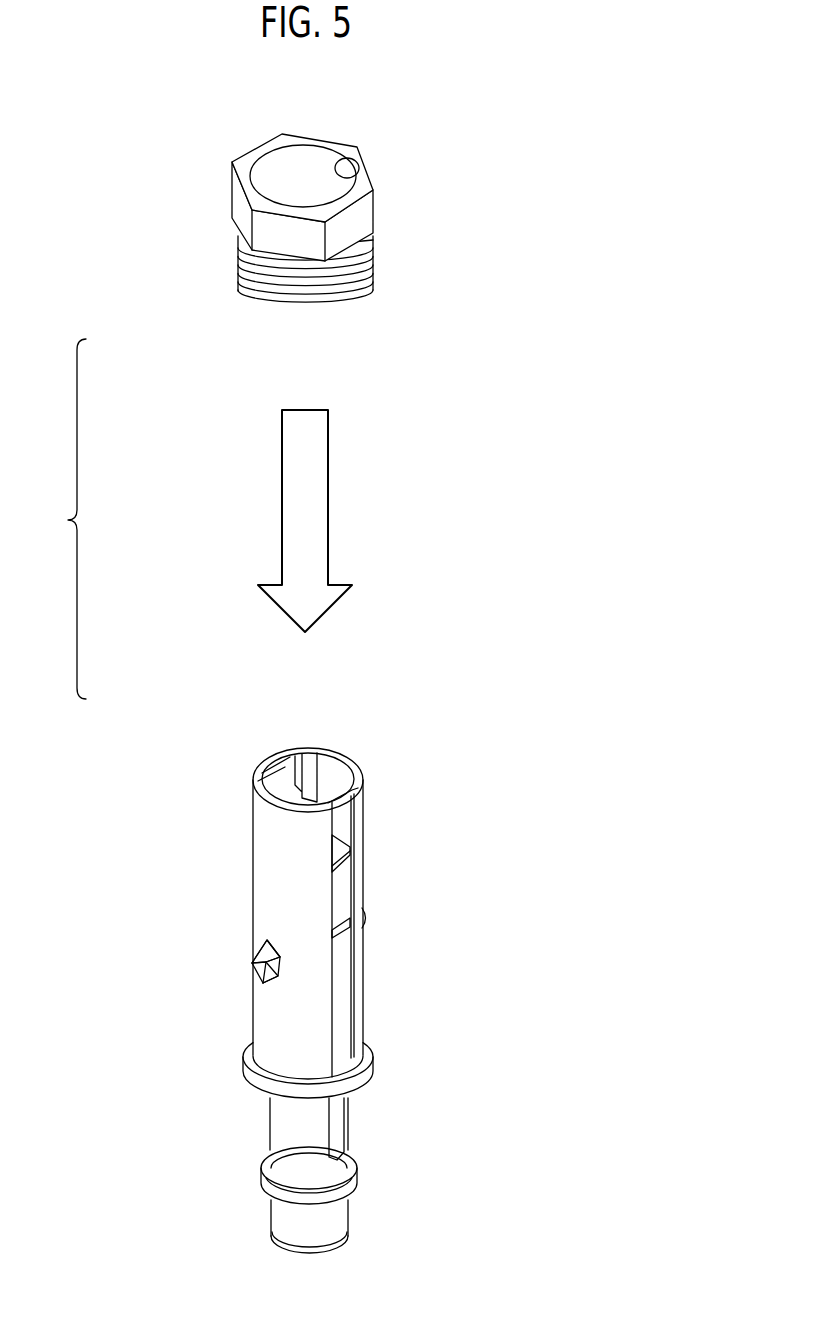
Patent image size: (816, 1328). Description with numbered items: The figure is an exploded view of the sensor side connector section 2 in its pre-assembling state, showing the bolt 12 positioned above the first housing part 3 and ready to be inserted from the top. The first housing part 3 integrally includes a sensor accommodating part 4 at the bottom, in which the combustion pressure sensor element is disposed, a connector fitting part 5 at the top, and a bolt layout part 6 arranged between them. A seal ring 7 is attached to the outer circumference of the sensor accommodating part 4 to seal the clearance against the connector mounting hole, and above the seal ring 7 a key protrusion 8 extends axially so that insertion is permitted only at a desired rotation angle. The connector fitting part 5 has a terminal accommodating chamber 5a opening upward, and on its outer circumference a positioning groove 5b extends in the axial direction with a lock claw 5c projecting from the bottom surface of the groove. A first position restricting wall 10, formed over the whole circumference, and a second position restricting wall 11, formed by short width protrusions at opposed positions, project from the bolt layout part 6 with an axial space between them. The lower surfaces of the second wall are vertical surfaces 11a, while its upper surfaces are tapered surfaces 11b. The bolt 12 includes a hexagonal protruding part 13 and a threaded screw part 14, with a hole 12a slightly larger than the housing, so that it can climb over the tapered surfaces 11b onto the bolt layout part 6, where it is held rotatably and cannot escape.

The sensor side connector section 2 is at (199, 519).
The first housing part 3 is at (267, 960).
The sensor accommodating part 4 is at (333, 1213).
The connector fitting part 5 is at (351, 885).
The terminal accommodating chamber 5a is at (333, 773).
The positioning groove 5b is at (337, 808).
The lock claw 5c is at (352, 858).
The bolt layout part 6 is at (303, 1015).
The seal ring 7 is at (267, 1185).
The key protrusion 8 is at (345, 1123).
The first position restricting wall 10 is at (267, 1092).
The second position restricting wall 11 is at (258, 975).
The vertical surfaces 11a is at (273, 985).
The tapered surfaces 11b is at (262, 950).
The bolt 12 is at (281, 241).
The hole 12a is at (347, 178).
The hexagonal protruding part 13 is at (366, 218).
The screw part 14 is at (368, 261).